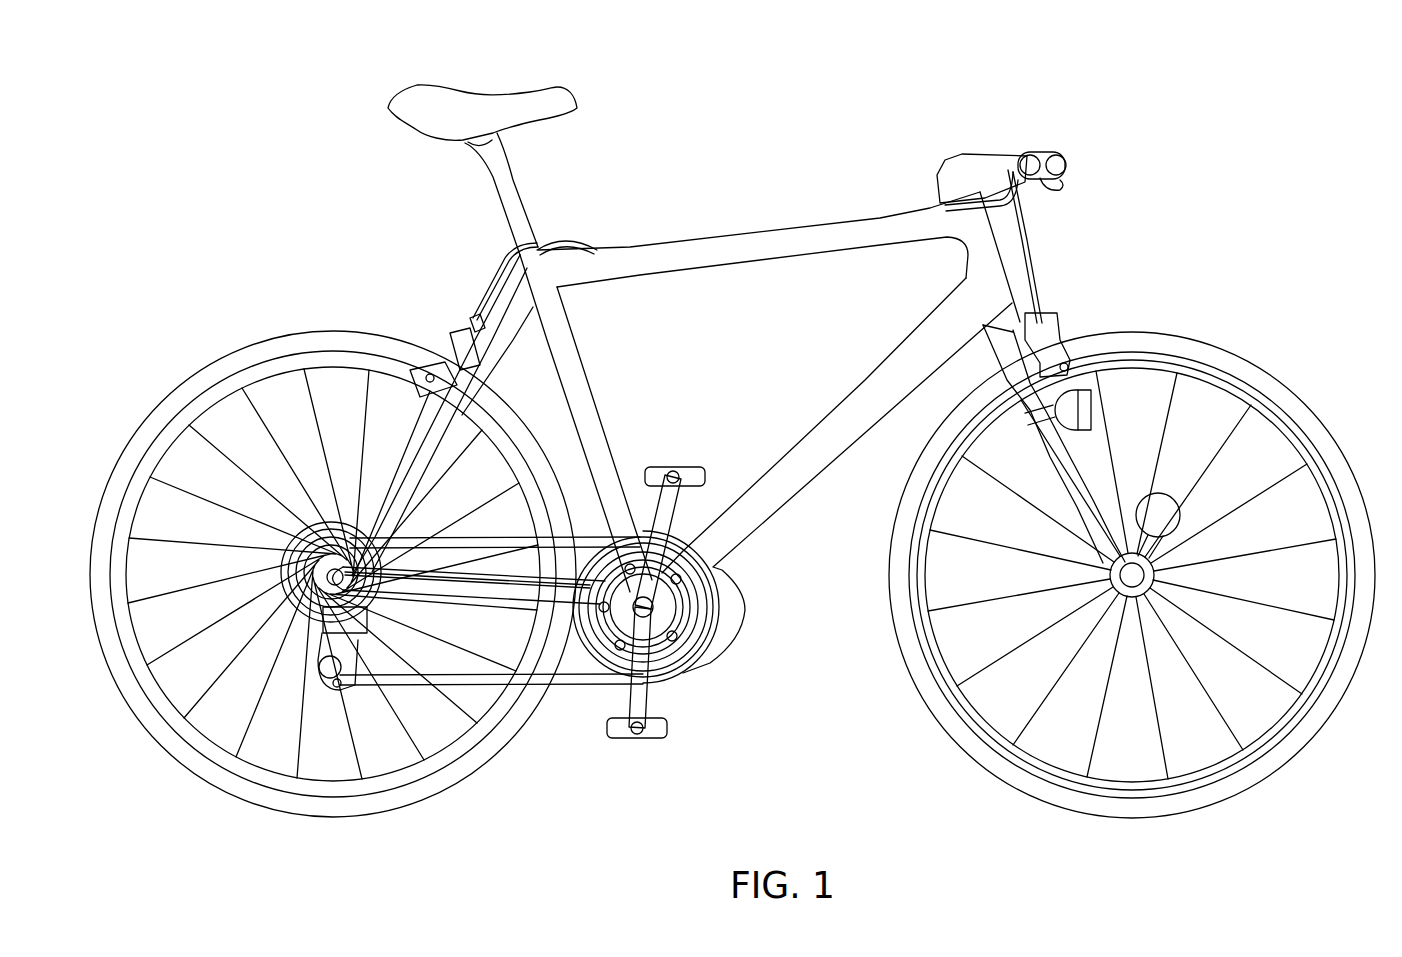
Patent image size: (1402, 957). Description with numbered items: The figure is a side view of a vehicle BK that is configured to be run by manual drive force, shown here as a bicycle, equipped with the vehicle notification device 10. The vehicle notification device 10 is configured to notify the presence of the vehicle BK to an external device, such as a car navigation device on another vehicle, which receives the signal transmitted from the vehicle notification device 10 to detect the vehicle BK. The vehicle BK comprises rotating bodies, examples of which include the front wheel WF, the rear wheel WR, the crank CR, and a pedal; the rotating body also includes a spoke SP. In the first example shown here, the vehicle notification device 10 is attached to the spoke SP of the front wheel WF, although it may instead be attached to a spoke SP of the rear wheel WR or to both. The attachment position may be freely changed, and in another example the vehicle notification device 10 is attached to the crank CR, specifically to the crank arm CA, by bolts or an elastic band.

The vehicle BK is at (1126, 83).
The rear wheel WR is at (250, 357).
The front wheel WF is at (1225, 352).
The spoke SP is at (262, 425).
The vehicle notification device 10 is at (1180, 481).
The crank arm CA is at (668, 510).
The crank CR is at (687, 693).